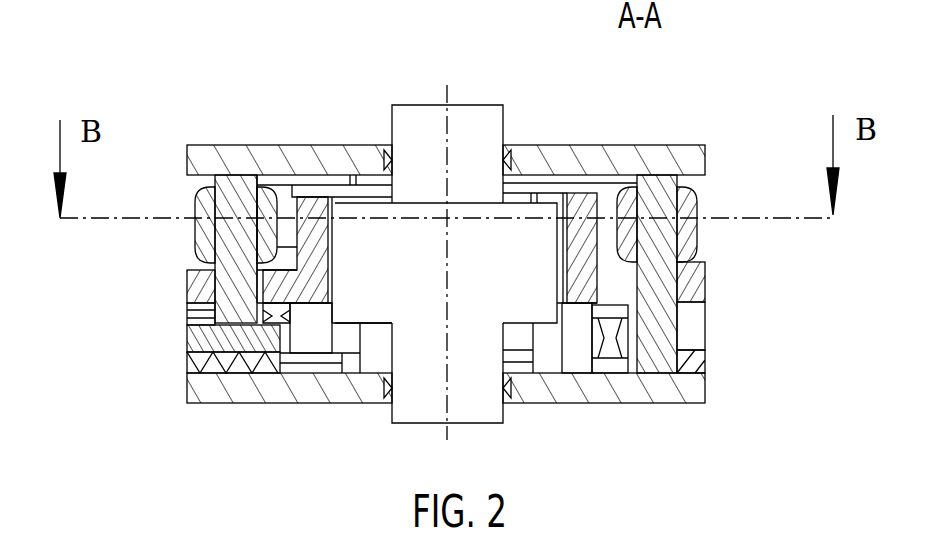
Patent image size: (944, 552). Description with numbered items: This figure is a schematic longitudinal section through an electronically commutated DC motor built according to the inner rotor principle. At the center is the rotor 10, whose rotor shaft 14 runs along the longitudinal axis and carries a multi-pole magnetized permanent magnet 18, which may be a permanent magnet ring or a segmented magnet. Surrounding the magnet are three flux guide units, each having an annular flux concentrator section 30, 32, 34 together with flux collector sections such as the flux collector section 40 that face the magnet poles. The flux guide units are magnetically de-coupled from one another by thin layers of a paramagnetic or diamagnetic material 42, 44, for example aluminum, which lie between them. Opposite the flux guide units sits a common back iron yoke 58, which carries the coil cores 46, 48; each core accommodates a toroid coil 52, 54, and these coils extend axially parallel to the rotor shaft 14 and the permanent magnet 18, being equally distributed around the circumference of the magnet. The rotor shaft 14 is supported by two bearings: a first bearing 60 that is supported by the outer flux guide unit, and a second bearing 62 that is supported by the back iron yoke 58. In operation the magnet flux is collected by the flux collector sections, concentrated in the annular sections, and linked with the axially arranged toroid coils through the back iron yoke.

The rotor 10 is at (486, 80).
The rotor shaft 14 is at (405, 125).
The permanent magnet 18 is at (362, 200).
The annular flux concentrator section 30 is at (693, 388).
The annular flux concentrator section 32 is at (700, 333).
The annular flux concentrator section 34 is at (705, 290).
The flux collector section 40 is at (596, 194).
The layer of paramagnetic or diamagnetic material 42 is at (197, 368).
The layer of paramagnetic or diamagnetic material 44 is at (200, 318).
The coil core 46 is at (650, 345).
The coil core 48 is at (213, 240).
The toroid coil 52 is at (697, 235).
The toroid coil 54 is at (205, 210).
The back iron yoke 58 is at (245, 160).
The first bearing 60 is at (503, 400).
The second bearing 62 is at (604, 130).